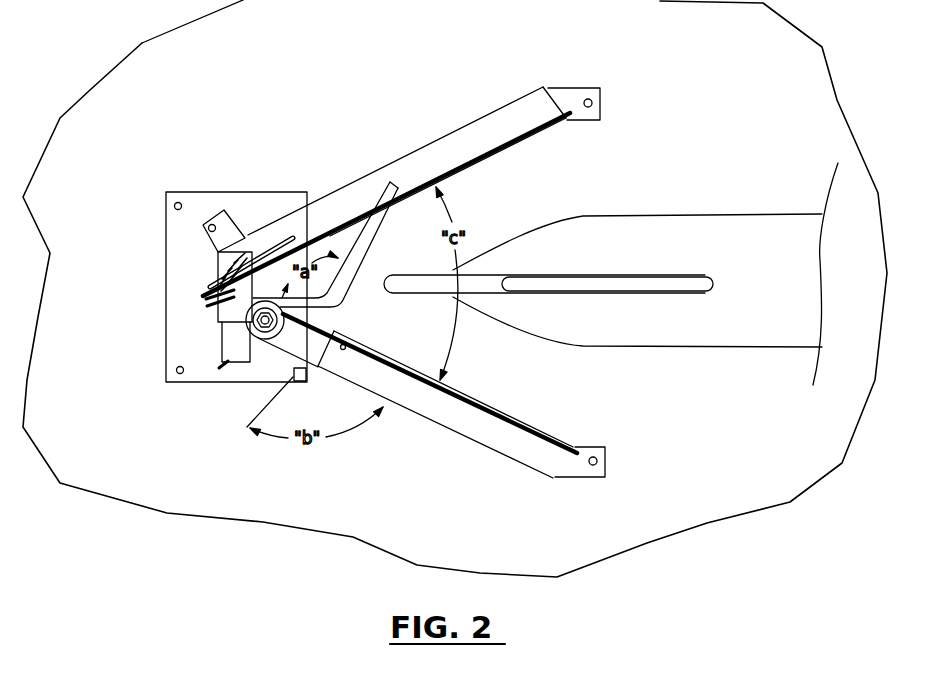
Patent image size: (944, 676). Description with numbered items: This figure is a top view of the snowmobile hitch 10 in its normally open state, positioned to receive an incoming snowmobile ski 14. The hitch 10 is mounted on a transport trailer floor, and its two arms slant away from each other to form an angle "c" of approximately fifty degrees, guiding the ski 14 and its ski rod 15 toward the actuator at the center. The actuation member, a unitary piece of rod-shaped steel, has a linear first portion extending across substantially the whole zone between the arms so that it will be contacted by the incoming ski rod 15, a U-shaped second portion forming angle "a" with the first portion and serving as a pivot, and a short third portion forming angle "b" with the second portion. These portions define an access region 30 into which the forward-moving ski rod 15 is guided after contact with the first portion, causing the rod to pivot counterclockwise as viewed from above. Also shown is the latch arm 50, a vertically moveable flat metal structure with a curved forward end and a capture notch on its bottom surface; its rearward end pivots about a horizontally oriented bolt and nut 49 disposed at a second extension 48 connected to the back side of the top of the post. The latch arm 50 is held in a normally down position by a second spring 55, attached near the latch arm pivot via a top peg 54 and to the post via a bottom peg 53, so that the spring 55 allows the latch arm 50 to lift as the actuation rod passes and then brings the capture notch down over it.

The snowmobile hitch 10 is at (193, 150).
The ski 14 is at (716, 208).
The ski rod 15 is at (423, 278).
The access region 30 is at (341, 334).
The second extension 48 is at (217, 303).
The bolt and nut 49 is at (213, 288).
The latch arm 50 is at (283, 240).
The bottom peg 53 is at (215, 283).
The top peg 54 is at (247, 253).
The second spring 55 is at (212, 253).